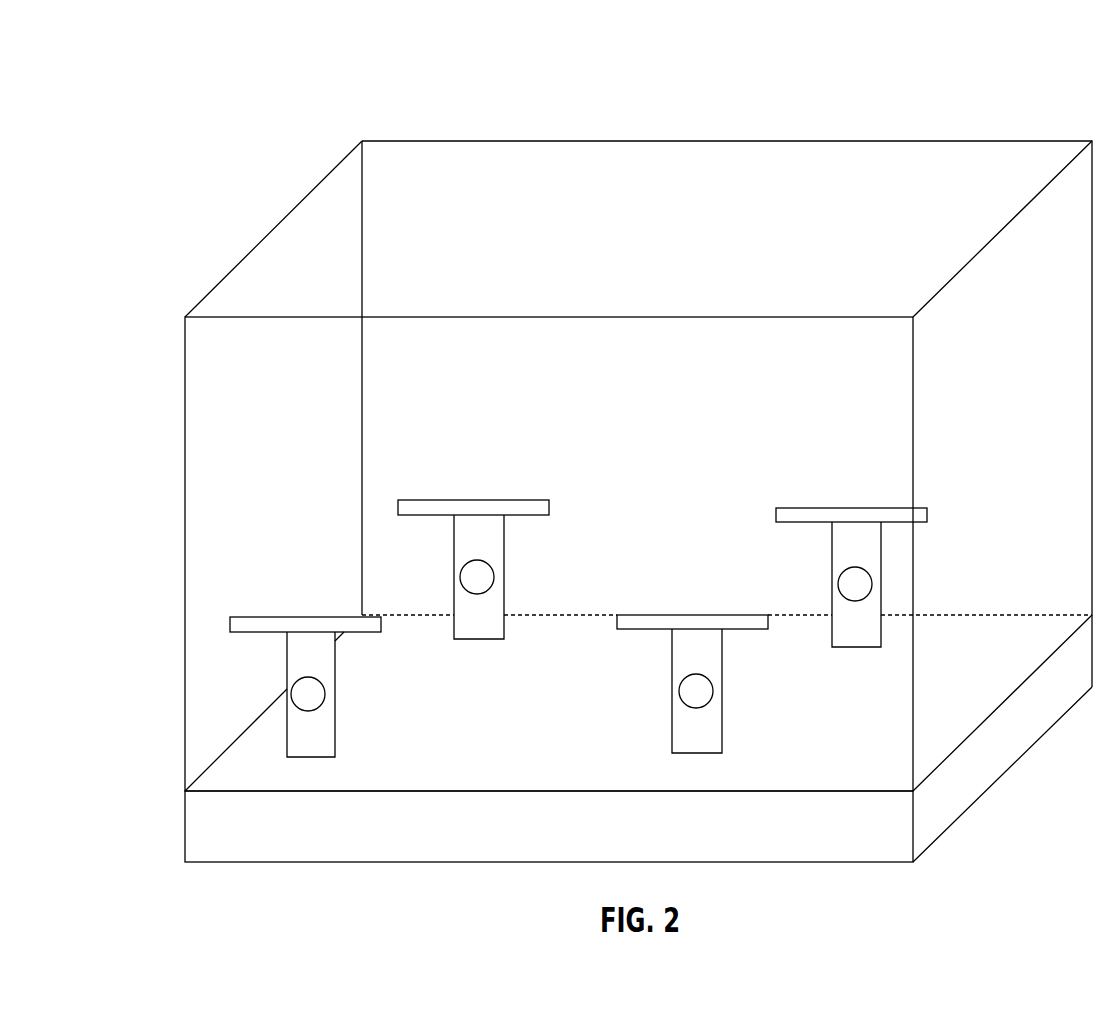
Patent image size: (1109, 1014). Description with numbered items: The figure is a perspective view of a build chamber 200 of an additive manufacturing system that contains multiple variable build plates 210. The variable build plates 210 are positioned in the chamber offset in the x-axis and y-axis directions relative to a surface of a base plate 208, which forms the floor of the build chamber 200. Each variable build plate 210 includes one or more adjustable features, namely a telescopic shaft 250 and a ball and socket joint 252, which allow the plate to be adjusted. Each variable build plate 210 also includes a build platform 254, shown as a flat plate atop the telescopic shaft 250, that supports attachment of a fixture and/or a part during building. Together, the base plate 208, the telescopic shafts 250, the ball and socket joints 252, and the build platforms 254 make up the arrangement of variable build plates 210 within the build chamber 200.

The build chamber 200 is at (252, 90).
The base plate 208 is at (195, 832).
The variable build plate 210 is at (290, 758).
The telescopic shaft 250 is at (287, 665).
The ball and socket joint 252 is at (327, 694).
The build platform 254 is at (260, 616).